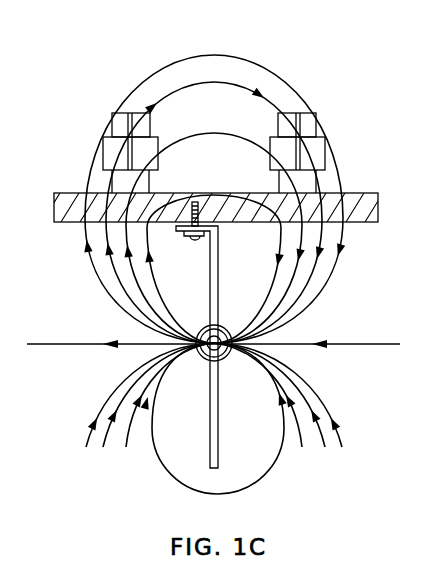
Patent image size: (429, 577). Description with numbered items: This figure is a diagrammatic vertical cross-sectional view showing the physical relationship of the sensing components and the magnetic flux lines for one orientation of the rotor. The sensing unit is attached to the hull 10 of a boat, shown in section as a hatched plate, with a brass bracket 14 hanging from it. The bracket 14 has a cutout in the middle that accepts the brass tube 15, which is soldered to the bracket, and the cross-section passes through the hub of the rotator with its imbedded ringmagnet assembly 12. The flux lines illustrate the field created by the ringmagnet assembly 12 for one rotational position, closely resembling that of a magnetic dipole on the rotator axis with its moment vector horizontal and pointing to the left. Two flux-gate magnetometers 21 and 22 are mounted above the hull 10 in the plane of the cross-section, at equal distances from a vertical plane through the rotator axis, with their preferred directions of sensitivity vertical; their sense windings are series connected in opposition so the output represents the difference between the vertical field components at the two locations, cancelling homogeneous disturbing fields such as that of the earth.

The hull 10 is at (171, 192).
The ringmagnet assembly 12 is at (222, 328).
The brass bracket 14 is at (219, 273).
The brass tube 15 is at (203, 328).
The magnetometer 21 is at (128, 112).
The magnetometer 22 is at (298, 112).